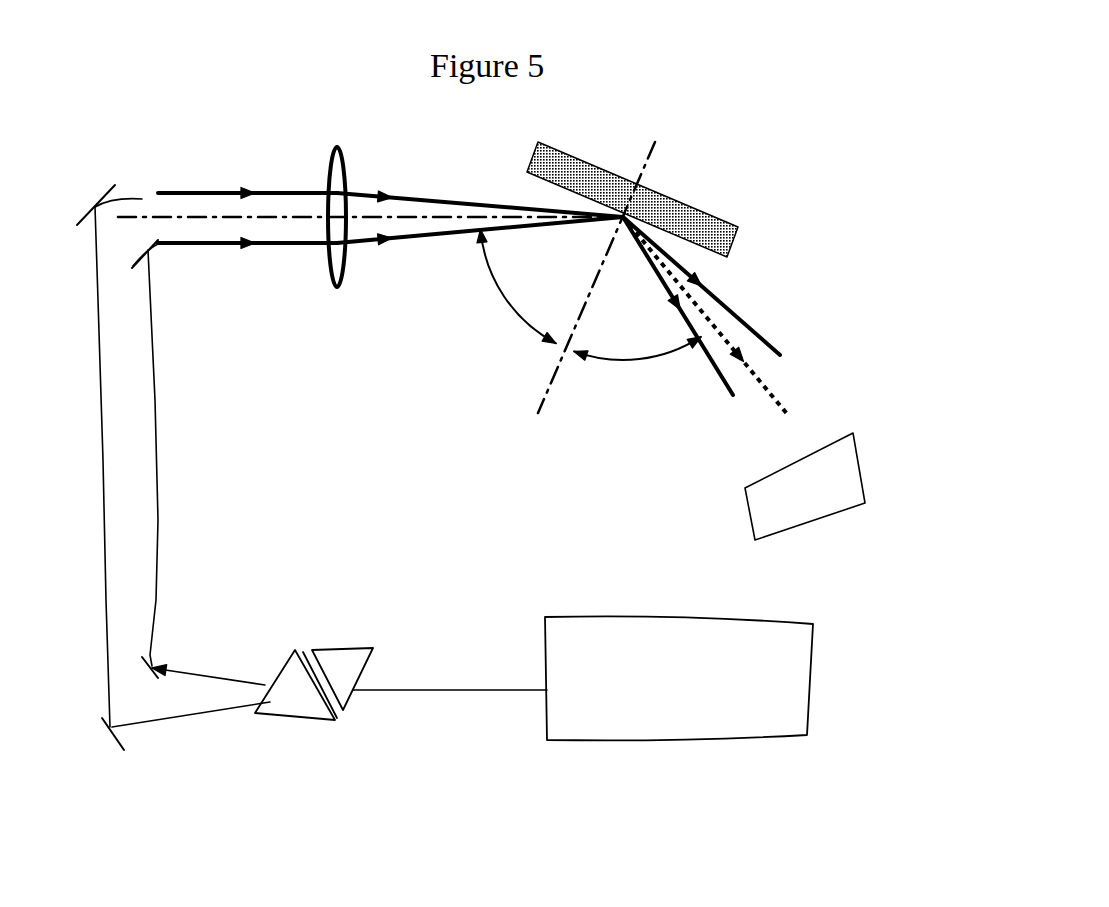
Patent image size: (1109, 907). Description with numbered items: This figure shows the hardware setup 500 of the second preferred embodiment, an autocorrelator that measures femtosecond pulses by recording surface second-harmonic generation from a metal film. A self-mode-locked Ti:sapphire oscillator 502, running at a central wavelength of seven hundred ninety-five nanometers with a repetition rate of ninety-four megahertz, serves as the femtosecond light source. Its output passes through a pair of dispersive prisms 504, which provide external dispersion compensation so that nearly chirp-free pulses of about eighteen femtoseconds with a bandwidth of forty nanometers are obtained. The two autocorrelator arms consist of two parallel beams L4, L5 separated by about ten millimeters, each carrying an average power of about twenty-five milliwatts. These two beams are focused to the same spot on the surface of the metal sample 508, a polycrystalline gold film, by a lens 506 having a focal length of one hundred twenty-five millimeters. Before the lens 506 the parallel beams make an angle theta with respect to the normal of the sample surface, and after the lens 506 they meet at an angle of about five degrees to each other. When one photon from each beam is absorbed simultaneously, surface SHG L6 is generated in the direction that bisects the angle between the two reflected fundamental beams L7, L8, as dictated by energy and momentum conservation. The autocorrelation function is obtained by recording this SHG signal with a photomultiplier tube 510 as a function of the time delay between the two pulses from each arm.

The hardware setup 500 is at (731, 80).
The Ti:sapphire oscillator 502 is at (820, 600).
The pair of dispersive prisms 504 is at (357, 707).
The lens 506 is at (365, 137).
The metal sample 508 is at (620, 135).
The photomultiplier tube (PMT) 510 is at (858, 474).
The parallel beam L4 is at (226, 660).
The parallel beam L5 is at (219, 697).
The surface SHG L6 is at (797, 409).
The reflected fundamental beam L7 is at (777, 336).
The reflected fundamental beam L8 is at (722, 396).